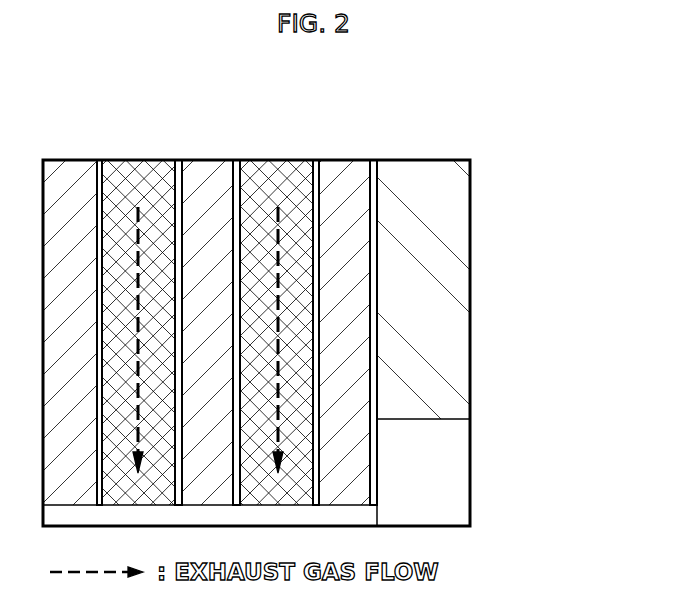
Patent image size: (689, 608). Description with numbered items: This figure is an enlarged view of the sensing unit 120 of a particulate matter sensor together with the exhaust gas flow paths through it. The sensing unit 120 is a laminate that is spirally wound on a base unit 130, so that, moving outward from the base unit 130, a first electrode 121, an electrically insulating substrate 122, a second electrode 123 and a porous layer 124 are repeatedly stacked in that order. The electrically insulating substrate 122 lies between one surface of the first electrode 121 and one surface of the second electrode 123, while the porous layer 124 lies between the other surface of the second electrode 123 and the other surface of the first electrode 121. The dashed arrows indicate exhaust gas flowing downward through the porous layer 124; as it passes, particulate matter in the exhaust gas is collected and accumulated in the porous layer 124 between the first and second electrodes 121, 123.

The sensing unit 120 is at (383, 473).
The first electrode 121 is at (237, 167).
The electrically insulating substrate 122 is at (200, 167).
The second electrode 123 is at (315, 167).
The porous layer 124 is at (279, 167).
The base unit 130 is at (432, 315).